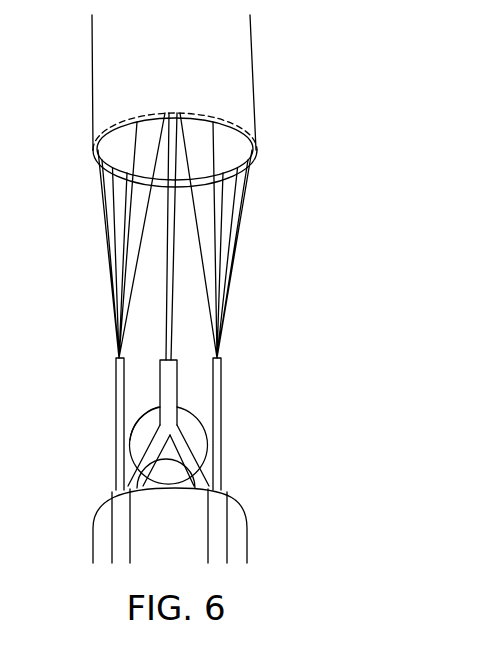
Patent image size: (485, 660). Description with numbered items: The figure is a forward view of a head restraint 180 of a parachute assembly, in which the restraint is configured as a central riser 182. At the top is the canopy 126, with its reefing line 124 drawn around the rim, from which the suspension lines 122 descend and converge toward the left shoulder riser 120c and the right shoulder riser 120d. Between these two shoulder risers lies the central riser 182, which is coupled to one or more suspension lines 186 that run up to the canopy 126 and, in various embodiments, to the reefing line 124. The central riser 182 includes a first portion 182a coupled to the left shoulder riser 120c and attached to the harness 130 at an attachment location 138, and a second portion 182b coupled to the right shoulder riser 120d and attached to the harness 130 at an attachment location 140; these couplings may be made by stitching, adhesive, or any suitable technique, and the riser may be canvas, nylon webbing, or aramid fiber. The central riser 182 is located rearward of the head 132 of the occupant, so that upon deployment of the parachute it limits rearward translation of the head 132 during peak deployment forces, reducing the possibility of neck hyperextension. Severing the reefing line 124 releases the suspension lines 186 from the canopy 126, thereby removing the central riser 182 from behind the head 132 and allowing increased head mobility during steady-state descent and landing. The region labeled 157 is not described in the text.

The canopy 126 is at (166, 67).
The reefing line 124 is at (94, 163).
The suspension lines 122 is at (228, 270).
The suspension line 186 is at (170, 290).
The central riser 182 is at (170, 383).
The first portion 182a is at (142, 479).
The second portion 182b is at (195, 479).
The left shoulder riser 120c is at (116, 378).
The right shoulder riser 120d is at (221, 393).
The head restraint 180 is at (140, 439).
The head 132 is at (151, 406).
The harness 130 is at (118, 520).
The attachment location 138 is at (105, 486).
The attachment location 140 is at (227, 486).
The base cavity 157 is at (160, 552).